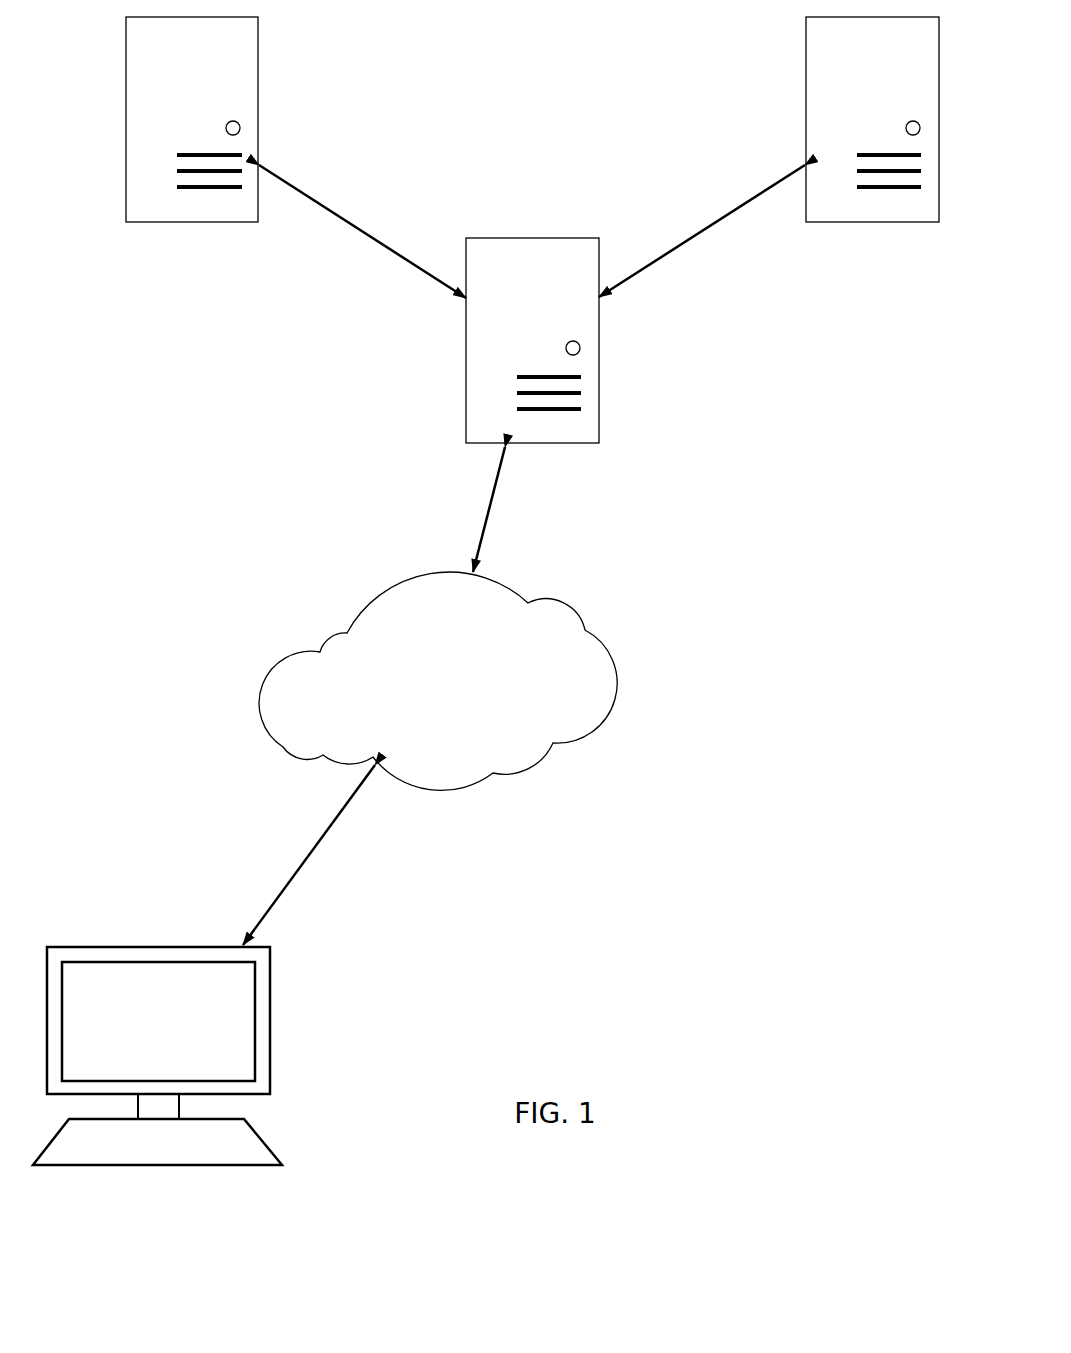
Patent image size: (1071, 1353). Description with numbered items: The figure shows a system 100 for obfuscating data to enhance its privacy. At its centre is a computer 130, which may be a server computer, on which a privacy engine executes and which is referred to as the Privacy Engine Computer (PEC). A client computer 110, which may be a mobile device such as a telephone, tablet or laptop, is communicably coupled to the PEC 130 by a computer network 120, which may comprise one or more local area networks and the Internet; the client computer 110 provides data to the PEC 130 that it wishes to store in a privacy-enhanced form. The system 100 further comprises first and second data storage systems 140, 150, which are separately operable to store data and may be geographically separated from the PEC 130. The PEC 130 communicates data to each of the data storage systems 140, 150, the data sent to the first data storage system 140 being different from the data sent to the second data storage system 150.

The system 100 is at (724, 474).
The client computer 110 is at (157, 1084).
The computer network 120 is at (438, 681).
The privacy engine computer 130 is at (532, 362).
The first data storage system 140 is at (192, 141).
The second data storage system 150 is at (872, 141).